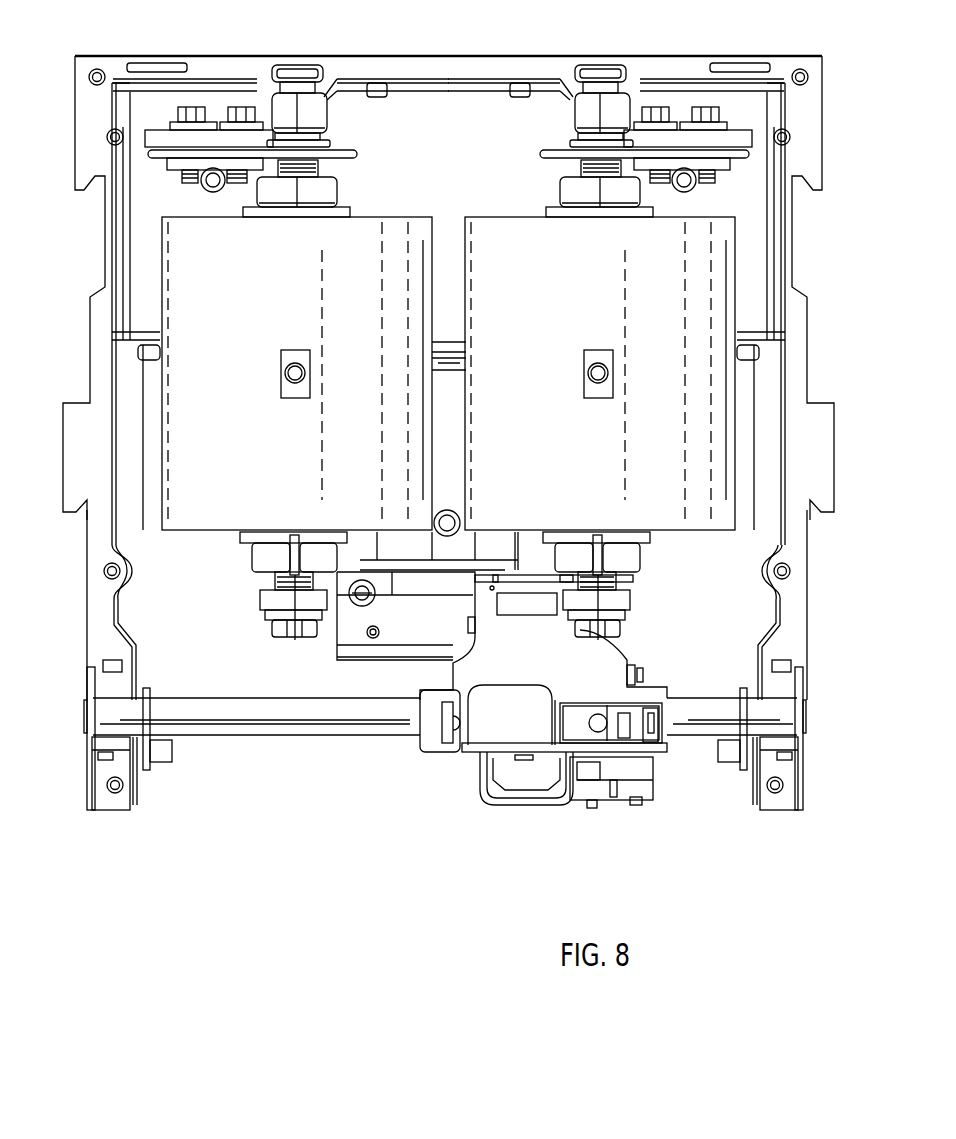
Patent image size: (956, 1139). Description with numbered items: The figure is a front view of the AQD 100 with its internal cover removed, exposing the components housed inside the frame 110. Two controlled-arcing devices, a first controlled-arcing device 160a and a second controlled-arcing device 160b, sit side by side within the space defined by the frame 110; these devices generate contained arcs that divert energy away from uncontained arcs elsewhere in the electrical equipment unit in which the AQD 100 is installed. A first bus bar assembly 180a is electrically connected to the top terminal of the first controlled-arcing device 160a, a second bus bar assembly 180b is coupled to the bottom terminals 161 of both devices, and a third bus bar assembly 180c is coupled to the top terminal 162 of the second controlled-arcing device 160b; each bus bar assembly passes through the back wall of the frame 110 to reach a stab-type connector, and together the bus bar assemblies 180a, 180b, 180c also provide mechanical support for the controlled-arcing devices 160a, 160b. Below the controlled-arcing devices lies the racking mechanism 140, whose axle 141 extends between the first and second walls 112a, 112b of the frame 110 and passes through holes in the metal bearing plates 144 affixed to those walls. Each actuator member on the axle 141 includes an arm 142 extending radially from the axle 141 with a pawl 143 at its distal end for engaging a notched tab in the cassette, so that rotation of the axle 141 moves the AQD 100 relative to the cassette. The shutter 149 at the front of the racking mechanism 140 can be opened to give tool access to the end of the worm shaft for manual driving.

The AQD 100 is at (434, 473).
The frame 110 is at (440, 67).
The first wall 112a is at (103, 803).
The second wall 112b is at (780, 803).
The racking mechanism 140 is at (504, 859).
The axle 141 is at (328, 713).
The arm 142 is at (145, 767).
The pawl 143 is at (167, 748).
The metal bearing plate 144 is at (88, 752).
The shutter 149 is at (487, 725).
The first controlled-arcing device 160a is at (185, 397).
The second controlled-arcing device 160b is at (653, 507).
The bottom terminals 161 is at (275, 577).
The top terminal 162 is at (580, 172).
The first bus bar assembly 180a is at (160, 137).
The second bus bar assembly 180b is at (443, 362).
The third bus bar assembly 180c is at (740, 137).